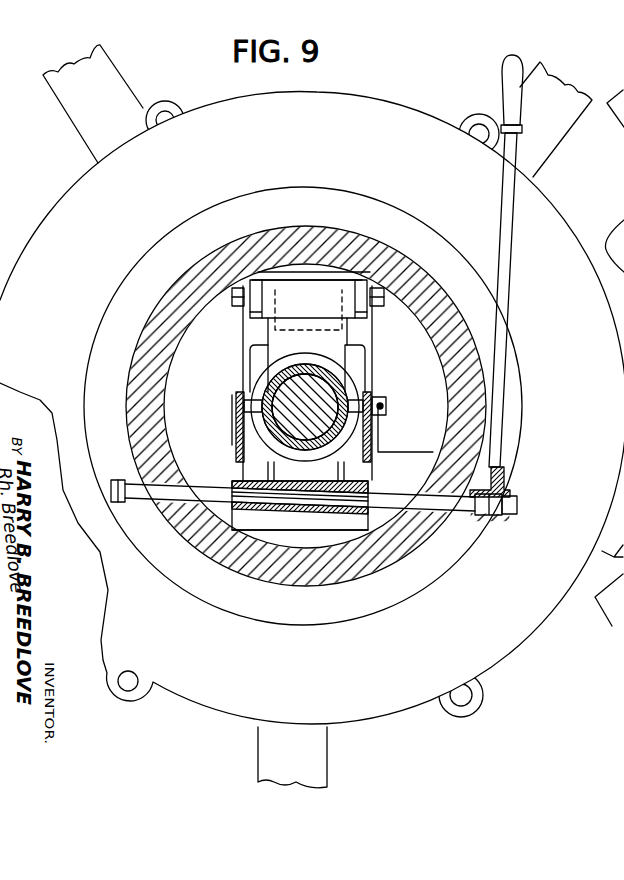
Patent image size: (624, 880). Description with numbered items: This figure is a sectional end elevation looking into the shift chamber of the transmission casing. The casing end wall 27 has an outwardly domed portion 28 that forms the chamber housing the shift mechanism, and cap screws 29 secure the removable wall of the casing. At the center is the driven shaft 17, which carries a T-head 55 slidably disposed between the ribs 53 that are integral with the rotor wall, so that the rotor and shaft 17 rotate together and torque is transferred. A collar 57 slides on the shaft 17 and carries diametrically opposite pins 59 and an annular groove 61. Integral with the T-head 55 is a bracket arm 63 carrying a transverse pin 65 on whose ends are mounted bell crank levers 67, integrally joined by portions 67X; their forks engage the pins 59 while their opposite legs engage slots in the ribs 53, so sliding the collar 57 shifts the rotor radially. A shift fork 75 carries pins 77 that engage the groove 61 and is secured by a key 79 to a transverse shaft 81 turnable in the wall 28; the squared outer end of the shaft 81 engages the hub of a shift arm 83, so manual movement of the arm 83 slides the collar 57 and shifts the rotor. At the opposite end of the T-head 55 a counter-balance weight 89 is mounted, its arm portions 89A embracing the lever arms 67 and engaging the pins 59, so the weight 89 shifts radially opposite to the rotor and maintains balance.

The driven shaft 17 is at (258, 378).
The end wall 27 is at (623, 193).
The outwardly domed portion 28 is at (412, 275).
The cap screws 29 is at (466, 693).
The ribs 53 is at (257, 353).
The T-head 55 is at (265, 482).
The collar 57 is at (332, 376).
The pins 59 is at (243, 403).
The annular groove 61 is at (357, 385).
The bracket arm 63 is at (363, 350).
The pin 65 is at (240, 296).
The bell crank levers 67 is at (246, 342).
The connecting portions 67X is at (288, 323).
The shift fork 75 is at (368, 464).
The pins 77 is at (238, 420).
The key 79 is at (315, 488).
The transverse shaft 81 is at (198, 496).
The shift arm 83 is at (506, 296).
The counter-balance weight 89 is at (422, 453).
The arm portions 89A is at (236, 424).